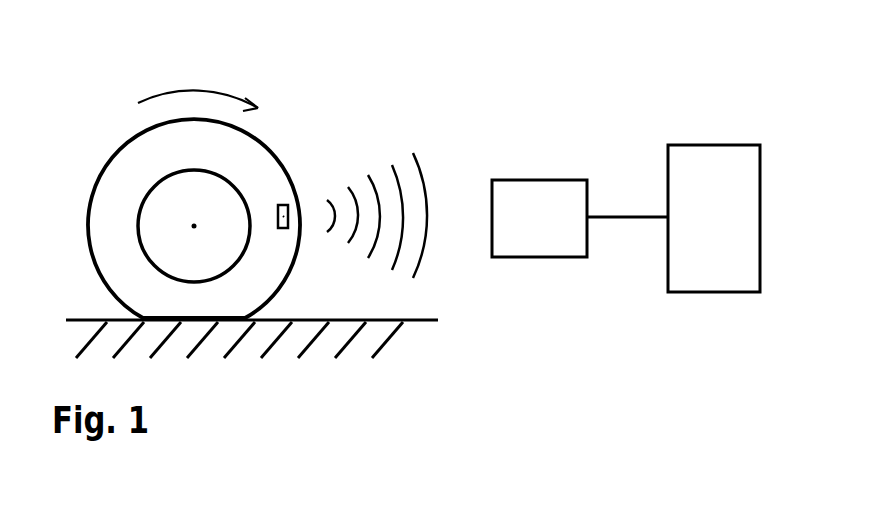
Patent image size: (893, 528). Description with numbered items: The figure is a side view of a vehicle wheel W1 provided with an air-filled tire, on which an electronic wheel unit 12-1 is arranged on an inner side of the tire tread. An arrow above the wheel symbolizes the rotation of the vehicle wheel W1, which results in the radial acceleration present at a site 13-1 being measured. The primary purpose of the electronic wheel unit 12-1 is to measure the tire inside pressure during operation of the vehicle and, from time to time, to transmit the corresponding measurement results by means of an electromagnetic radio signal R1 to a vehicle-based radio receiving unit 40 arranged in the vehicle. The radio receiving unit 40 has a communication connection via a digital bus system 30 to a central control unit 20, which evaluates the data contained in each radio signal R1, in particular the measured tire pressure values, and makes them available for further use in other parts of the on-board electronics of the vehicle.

The vehicle wheel W1 is at (88, 158).
The radio signal R1 is at (428, 143).
The electronic wheel unit 12-1 is at (291, 209).
The site 13-1 is at (293, 215).
The radio receiving unit 40 is at (552, 229).
The central control unit 20 is at (729, 229).
The digital bus system 30 is at (624, 260).